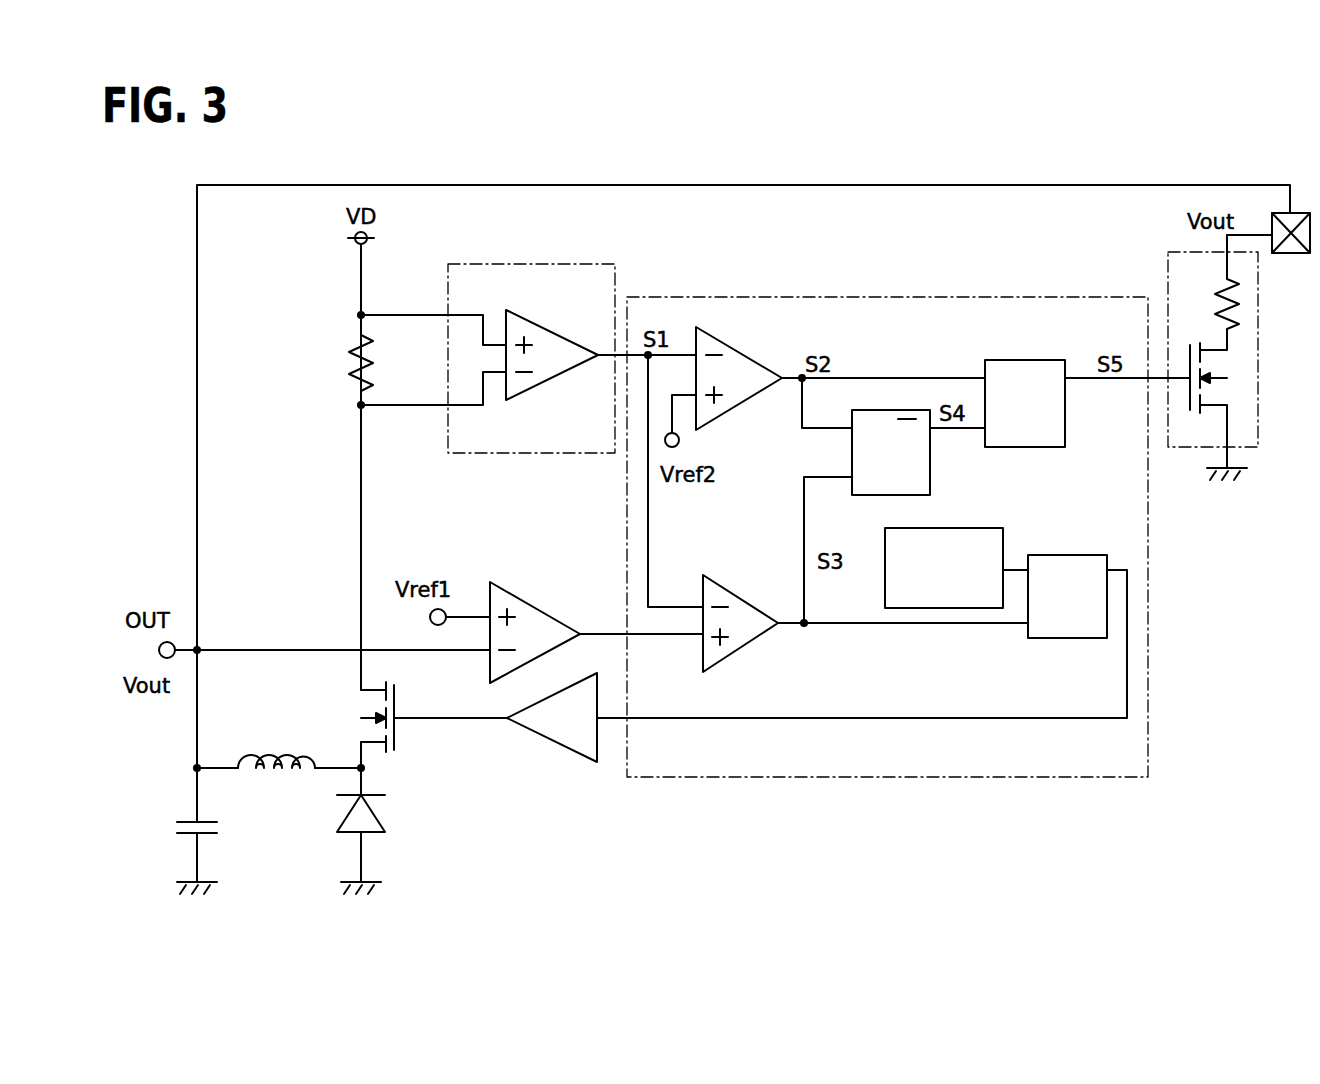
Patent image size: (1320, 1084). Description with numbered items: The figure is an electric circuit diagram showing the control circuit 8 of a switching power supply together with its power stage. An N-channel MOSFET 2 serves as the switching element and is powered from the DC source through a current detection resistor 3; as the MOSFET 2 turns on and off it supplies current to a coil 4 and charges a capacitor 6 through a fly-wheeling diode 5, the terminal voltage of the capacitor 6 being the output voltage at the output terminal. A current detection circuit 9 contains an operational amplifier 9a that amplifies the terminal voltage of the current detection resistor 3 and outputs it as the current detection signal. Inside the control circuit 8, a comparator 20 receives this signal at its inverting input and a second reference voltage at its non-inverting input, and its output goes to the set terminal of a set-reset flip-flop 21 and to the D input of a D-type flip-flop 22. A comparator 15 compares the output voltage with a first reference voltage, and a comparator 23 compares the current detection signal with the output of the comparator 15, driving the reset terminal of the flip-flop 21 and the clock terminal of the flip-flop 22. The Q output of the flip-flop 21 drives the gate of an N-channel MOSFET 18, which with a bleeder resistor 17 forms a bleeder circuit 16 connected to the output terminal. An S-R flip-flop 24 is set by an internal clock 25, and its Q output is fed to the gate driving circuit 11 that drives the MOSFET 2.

The N-channel MOSFET 2 is at (398, 734).
The current detection resistor 3 is at (350, 357).
The coil 4 is at (275, 752).
The fly-wheeling diode 5 is at (380, 818).
The capacitor 6 is at (228, 832).
The control circuit 8 is at (952, 297).
The current detection circuit 9 is at (538, 264).
The operational amplifier 9a is at (570, 336).
The gate driving circuit 11 is at (545, 742).
The comparator 15 is at (532, 600).
The bleeder circuit 16 is at (1190, 447).
The bleeder resistor 17 is at (1212, 292).
The N-channel MOSFET 18 is at (1232, 378).
The comparator 20 is at (766, 368).
The set-reset flip-flop 21 is at (1028, 360).
The D-type flip-flop 22 is at (852, 455).
The comparator 23 is at (750, 600).
The S-R flip-flop 24 is at (1042, 638).
The internal clock 25 is at (1010, 528).